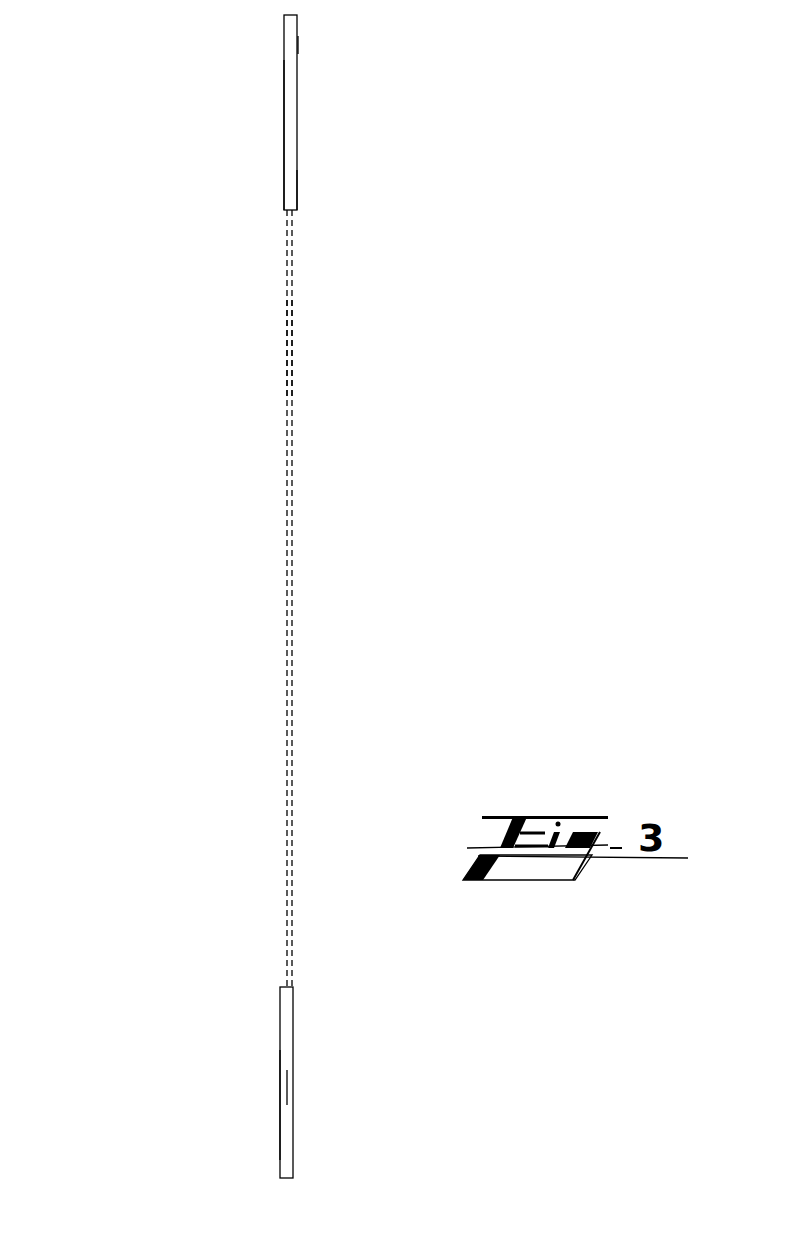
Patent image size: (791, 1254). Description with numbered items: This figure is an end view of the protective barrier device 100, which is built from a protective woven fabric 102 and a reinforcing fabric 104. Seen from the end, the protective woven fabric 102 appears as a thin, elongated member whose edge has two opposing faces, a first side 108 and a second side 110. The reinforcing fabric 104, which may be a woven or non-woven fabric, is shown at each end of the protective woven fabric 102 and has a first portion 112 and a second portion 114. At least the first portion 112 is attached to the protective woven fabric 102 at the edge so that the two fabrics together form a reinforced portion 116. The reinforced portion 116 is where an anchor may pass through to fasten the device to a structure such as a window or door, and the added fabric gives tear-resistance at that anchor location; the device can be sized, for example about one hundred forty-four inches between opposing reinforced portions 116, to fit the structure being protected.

The protective barrier device 100 is at (198, 660).
The protective woven fabric 102 is at (290, 618).
The reinforcing fabric 104 is at (295, 117).
The first side 108 is at (292, 338).
The second side 110 is at (280, 353).
The first portion 112 is at (278, 185).
The second portion 114 is at (299, 188).
The reinforced portion 116 is at (255, 117).